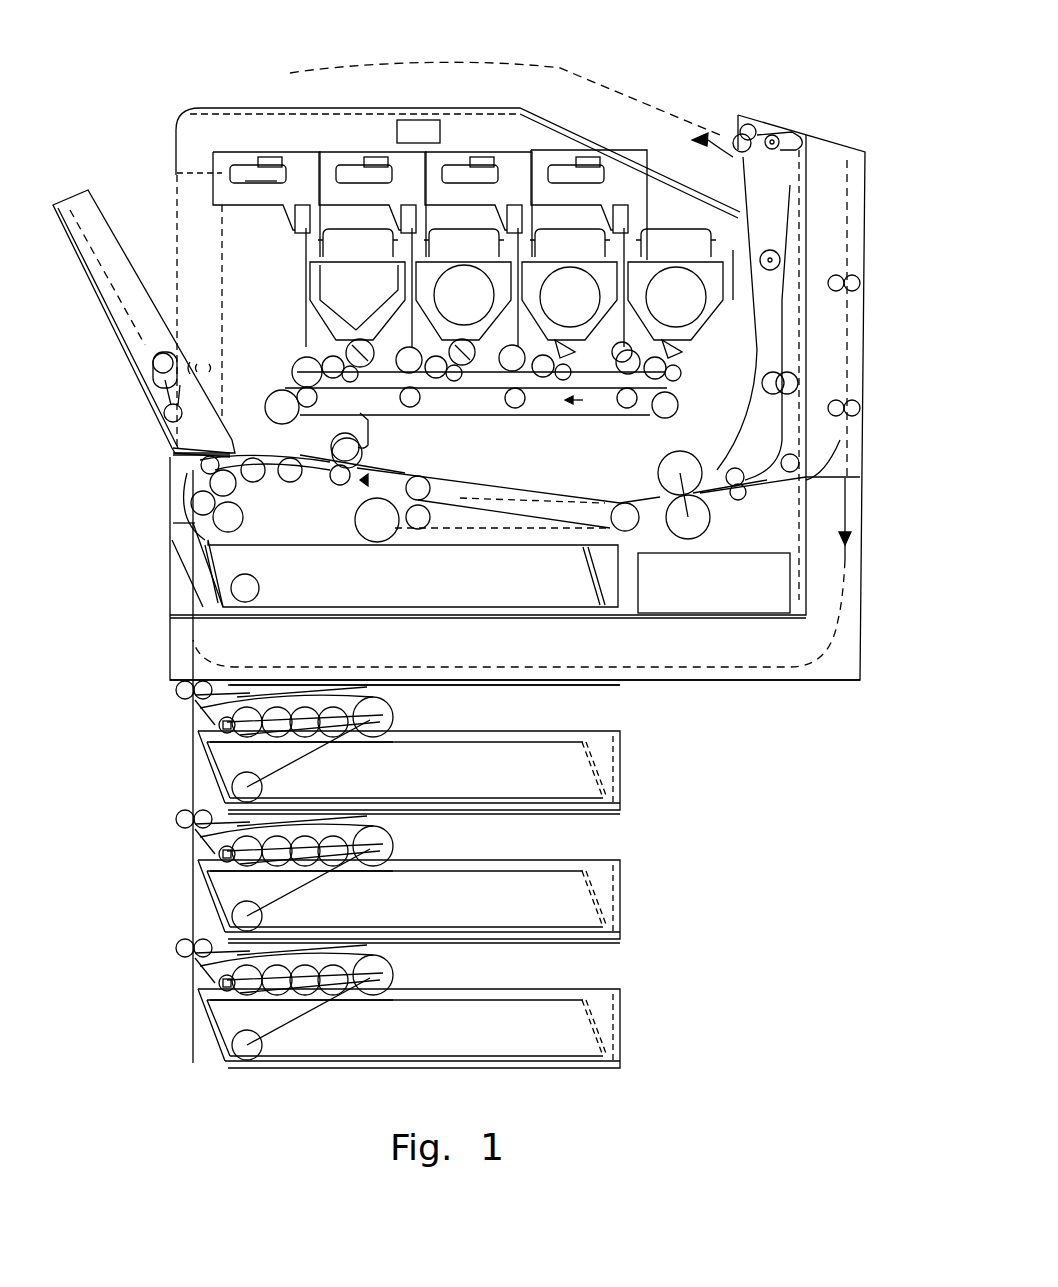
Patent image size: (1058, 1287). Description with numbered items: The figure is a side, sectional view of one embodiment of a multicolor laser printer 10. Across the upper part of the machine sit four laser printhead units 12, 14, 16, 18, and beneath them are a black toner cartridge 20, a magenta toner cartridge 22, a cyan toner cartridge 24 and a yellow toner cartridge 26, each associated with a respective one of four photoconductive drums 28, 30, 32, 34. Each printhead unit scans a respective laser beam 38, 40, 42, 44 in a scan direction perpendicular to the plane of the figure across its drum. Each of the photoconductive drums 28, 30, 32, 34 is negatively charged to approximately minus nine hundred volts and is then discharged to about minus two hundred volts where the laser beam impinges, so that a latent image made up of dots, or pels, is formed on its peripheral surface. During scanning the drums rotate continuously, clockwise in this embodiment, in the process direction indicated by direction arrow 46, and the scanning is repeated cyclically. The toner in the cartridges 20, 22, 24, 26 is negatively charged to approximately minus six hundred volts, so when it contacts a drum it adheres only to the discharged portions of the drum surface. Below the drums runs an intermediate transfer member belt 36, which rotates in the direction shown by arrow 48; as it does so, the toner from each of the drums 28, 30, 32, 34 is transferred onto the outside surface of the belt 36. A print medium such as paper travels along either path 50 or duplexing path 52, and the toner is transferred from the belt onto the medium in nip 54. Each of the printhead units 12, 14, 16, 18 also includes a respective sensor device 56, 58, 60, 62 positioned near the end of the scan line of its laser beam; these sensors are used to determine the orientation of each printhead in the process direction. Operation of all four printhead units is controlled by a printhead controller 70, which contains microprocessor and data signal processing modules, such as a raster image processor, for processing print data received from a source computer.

The multicolor laser printer 10 is at (716, 76).
The laser printhead unit 12 is at (303, 152).
The laser printhead unit 14 is at (376, 152).
The laser printhead unit 16 is at (462, 155).
The laser printhead unit 18 is at (572, 152).
The black toner cartridge 20 is at (376, 330).
The magenta toner cartridge 22 is at (479, 326).
The cyan toner cartridge 24 is at (583, 330).
The yellow toner cartridge 26 is at (691, 333).
The photoconductive drum 28 is at (290, 355).
The photoconductive drum 30 is at (423, 392).
The photoconductive drum 32 is at (533, 393).
The photoconductive drum 34 is at (643, 416).
The intermediate transfer member belt 36 is at (566, 424).
The laser beam 38 is at (293, 317).
The laser beam 40 is at (337, 167).
The laser beam 42 is at (508, 163).
The laser beam 44 is at (634, 197).
The direction arrow 46 is at (374, 420).
The arrow 48 is at (595, 403).
The path 50 is at (293, 587).
The duplexing path 52 is at (240, 640).
The nip 54 is at (370, 470).
The sensor device 56 is at (307, 253).
The sensor device 58 is at (410, 257).
The sensor device 60 is at (532, 255).
The sensor device 62 is at (633, 255).
The printhead controller 70 is at (418, 131).